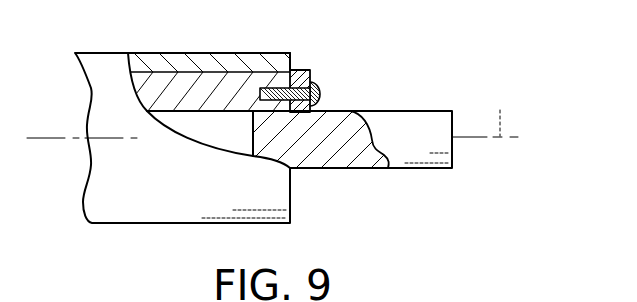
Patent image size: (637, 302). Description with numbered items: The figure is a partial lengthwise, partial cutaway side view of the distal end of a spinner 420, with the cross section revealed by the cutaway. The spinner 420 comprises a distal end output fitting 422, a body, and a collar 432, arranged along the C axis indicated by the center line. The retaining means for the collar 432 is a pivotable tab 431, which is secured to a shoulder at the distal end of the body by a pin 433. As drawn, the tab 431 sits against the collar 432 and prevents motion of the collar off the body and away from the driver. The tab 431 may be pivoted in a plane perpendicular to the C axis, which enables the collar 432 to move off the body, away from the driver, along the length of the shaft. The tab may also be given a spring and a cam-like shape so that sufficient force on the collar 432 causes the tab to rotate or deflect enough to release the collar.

The spinner 420 is at (285, 25).
The distal end output fitting 422 is at (415, 110).
The pivotable tab 431 is at (296, 71).
The collar 432 is at (158, 208).
The pin 433 is at (321, 88).